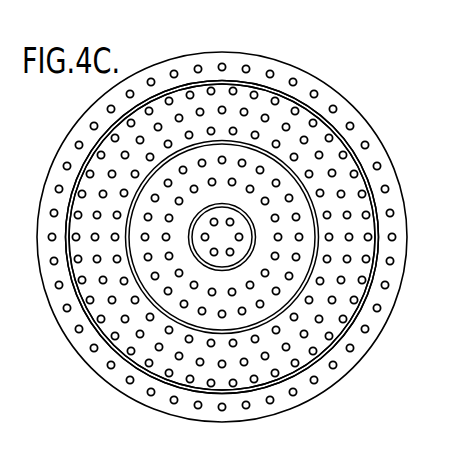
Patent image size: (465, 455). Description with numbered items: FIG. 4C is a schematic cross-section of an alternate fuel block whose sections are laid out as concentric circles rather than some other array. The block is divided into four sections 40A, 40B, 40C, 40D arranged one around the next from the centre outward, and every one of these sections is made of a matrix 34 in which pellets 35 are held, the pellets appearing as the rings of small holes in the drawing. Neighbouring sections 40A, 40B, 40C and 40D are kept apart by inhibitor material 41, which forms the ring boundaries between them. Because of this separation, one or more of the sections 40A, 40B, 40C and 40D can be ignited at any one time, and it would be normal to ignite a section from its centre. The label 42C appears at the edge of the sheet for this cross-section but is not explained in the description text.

The matrix 34 is at (222, 158).
The pellets 35 is at (394, 212).
The section 40A is at (337, 158).
The section 40B is at (254, 163).
The section 40C is at (175, 90).
The section 40D is at (72, 144).
The inhibitor material 41 is at (370, 182).
The plate 42C is at (250, 454).